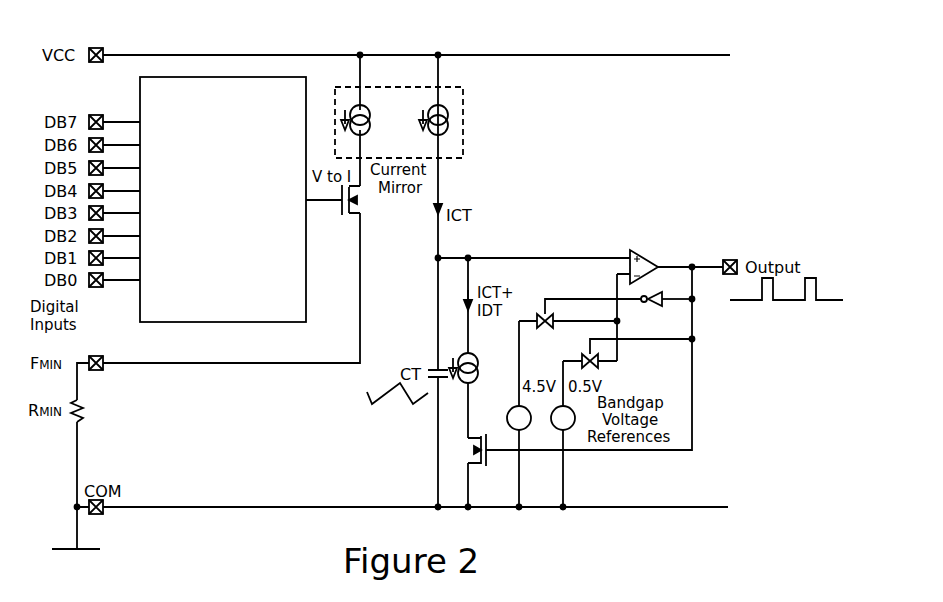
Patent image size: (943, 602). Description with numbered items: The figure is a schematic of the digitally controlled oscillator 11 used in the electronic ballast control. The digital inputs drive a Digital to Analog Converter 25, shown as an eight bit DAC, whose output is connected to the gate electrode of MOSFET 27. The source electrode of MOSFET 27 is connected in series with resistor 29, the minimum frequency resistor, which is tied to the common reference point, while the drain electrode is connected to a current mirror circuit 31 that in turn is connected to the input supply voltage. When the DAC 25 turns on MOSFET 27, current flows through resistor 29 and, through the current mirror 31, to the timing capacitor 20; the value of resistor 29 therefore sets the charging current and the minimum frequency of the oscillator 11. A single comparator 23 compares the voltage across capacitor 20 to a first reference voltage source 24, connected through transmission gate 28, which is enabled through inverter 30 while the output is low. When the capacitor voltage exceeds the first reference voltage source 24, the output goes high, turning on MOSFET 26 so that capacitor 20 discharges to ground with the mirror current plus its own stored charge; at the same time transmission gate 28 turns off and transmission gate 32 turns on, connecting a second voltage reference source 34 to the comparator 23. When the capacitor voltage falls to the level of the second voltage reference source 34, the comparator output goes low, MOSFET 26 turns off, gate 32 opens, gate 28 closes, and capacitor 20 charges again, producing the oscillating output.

The digital oscillator 11 is at (604, 113).
The capacitor 20 is at (436, 365).
The comparator 23 is at (633, 252).
The first reference voltage source 24 is at (515, 407).
The Digital to Analog Converter 25 is at (237, 247).
The MOSFET 26 is at (488, 462).
The MOSFET 27 is at (362, 205).
The transmission gate 28 is at (543, 315).
The resistor 29 is at (84, 411).
The inverter 30 is at (653, 295).
The current mirror circuit 31 is at (463, 122).
The transmission gate 32 is at (600, 364).
The second voltage reference source 34 is at (568, 430).